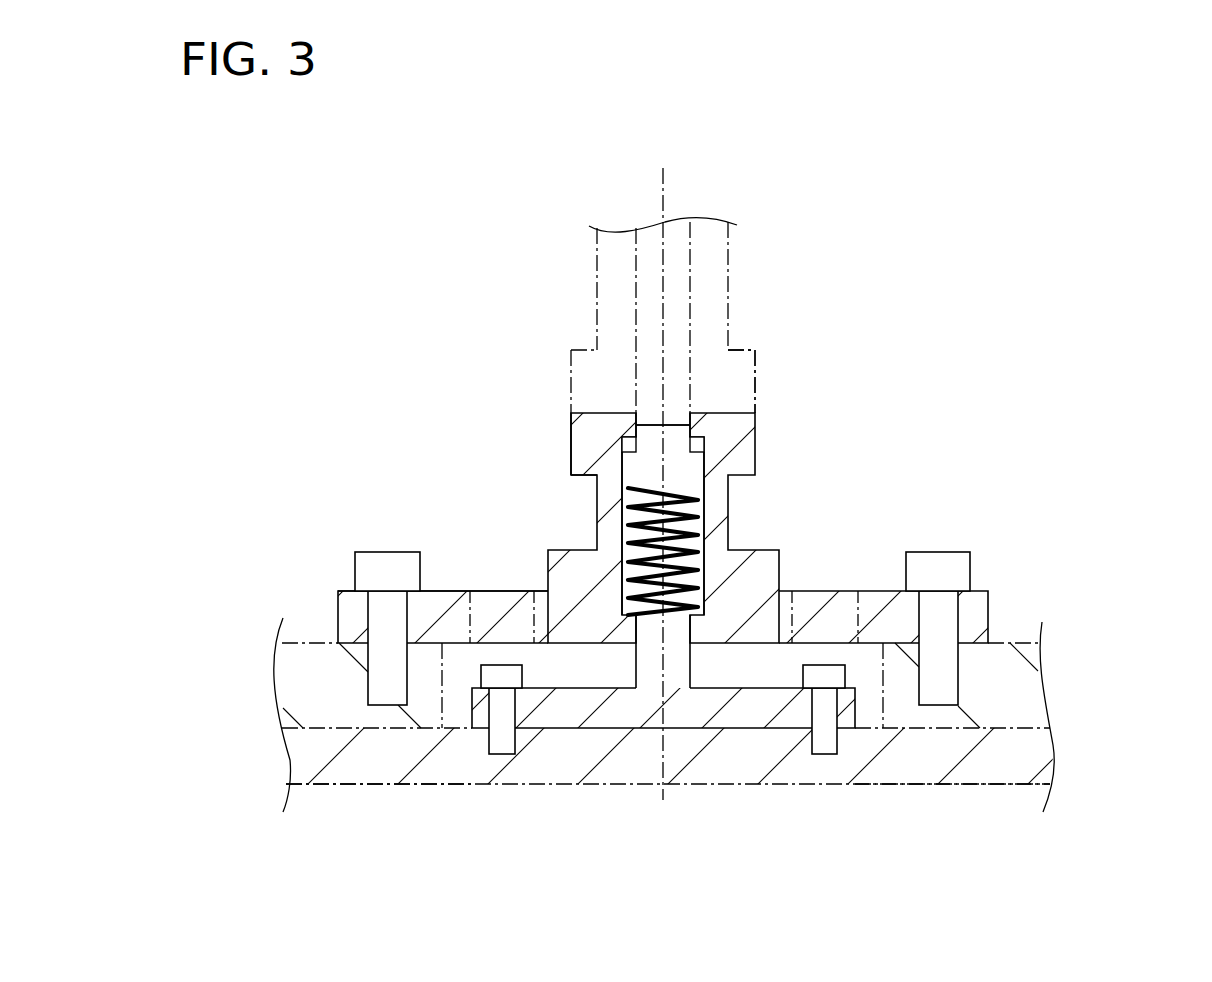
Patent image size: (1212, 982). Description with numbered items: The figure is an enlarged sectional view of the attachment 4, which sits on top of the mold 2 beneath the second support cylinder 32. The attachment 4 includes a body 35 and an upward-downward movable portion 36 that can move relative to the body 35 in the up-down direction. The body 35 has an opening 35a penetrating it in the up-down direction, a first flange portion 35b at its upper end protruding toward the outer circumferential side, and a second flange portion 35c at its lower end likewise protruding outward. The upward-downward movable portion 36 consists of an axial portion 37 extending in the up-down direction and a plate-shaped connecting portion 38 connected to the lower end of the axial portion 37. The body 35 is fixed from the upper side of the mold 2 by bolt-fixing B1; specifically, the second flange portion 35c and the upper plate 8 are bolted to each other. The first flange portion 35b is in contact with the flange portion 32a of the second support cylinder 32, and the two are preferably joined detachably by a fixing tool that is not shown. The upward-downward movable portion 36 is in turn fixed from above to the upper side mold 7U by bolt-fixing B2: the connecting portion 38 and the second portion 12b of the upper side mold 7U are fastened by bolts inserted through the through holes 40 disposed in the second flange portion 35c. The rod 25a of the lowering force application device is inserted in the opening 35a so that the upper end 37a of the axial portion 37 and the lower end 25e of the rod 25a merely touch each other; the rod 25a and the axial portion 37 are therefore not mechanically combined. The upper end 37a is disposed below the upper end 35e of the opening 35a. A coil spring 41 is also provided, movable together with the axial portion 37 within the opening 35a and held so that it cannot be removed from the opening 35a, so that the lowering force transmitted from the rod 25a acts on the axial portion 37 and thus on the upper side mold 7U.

The mold 2 is at (1080, 772).
The attachment 4 is at (1045, 303).
The upper side mold 7U is at (993, 770).
The upper plate 8 is at (1005, 692).
The second portion of the upper side mold 12b is at (382, 757).
The rod 25a is at (678, 277).
The lower end of the rod 25e is at (677, 432).
The second support cylinder 32 is at (710, 298).
The flange portion of the second support cylinder 32a is at (755, 355).
The body 35 is at (773, 465).
The opening 35a is at (707, 507).
The first flange portion 35b is at (588, 447).
The second flange portion 35c is at (353, 617).
The upper end of the opening 35e is at (630, 407).
The upward-downward movable portion 36 is at (733, 733).
The axial portion 37 is at (648, 659).
The upper end of the axial portion 37a is at (648, 425).
The connecting portion 38 is at (650, 722).
The through holes 40 is at (472, 605).
The coil spring 41 is at (628, 553).
The bolt-fixing B1 is at (987, 552).
The bolt-fixing B2 is at (823, 661).